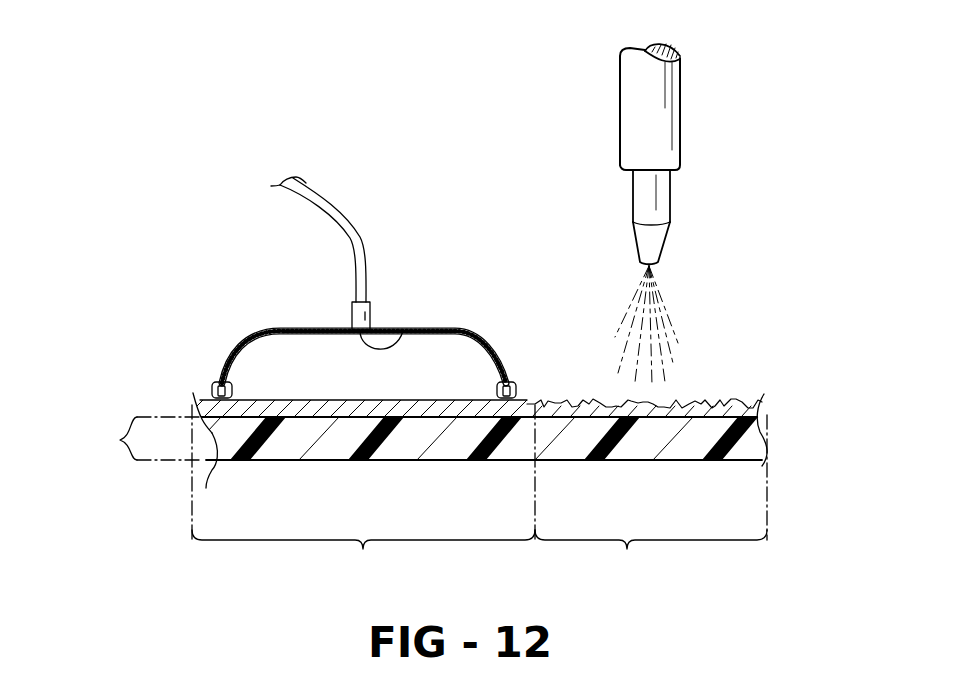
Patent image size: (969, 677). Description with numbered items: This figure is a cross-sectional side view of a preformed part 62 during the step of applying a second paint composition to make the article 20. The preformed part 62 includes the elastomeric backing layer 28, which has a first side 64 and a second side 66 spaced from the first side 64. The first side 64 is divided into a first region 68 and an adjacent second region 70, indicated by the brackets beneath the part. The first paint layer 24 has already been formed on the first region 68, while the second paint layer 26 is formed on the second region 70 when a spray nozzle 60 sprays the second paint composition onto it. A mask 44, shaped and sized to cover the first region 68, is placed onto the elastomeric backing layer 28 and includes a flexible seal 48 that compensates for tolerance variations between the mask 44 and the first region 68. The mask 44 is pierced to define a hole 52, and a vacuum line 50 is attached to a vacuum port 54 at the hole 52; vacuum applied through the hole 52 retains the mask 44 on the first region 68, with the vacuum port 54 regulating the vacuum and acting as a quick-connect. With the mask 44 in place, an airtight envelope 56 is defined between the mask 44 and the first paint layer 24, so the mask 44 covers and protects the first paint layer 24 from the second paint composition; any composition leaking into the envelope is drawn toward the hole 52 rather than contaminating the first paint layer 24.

The article 20 is at (166, 366).
The first paint layer 24 is at (190, 406).
The second paint layer 26 is at (728, 400).
The elastomeric backing layer 28 is at (752, 448).
The mask 44 is at (238, 341).
The flexible seal 48 is at (515, 390).
The vacuum line 50 is at (325, 207).
The hole 52 is at (405, 332).
The vacuum port 54 is at (365, 315).
The airtight envelope 56 is at (329, 368).
The spray nozzle 60 is at (665, 153).
The preformed part 62 is at (430, 452).
The first side 64 is at (708, 400).
The second side 66 is at (645, 460).
The first region 68 is at (363, 489).
The second region 70 is at (651, 493).